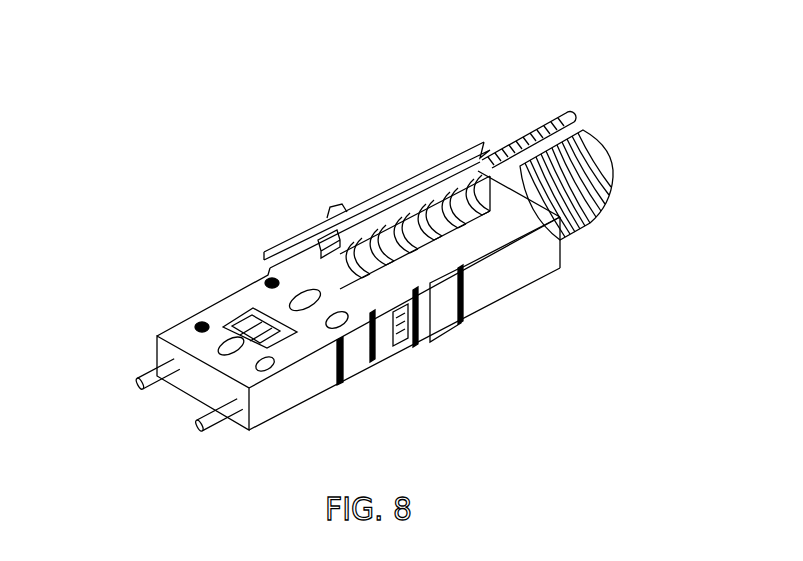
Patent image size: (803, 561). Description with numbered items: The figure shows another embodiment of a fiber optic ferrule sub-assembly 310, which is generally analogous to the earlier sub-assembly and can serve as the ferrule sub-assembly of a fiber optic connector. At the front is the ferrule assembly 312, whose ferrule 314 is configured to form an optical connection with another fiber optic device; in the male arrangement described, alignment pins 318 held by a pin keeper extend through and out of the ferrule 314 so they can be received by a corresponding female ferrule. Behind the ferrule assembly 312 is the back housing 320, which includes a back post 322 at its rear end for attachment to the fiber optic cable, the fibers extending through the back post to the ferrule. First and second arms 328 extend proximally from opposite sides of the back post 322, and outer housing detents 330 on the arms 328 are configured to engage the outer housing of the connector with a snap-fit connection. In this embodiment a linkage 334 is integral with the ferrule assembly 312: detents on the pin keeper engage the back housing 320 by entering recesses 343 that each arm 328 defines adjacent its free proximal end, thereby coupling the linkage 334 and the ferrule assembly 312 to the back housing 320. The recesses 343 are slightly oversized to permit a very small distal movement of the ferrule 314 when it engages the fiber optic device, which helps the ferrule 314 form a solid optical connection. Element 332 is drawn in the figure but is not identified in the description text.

The fiber optic ferrule sub-assembly 310 is at (231, 108).
The ferrule assembly 312 is at (200, 242).
The ferrule 314 is at (183, 340).
The alignment pins 318 is at (208, 409).
The back housing 320 is at (426, 116).
The back post 322 is at (592, 191).
The arms 328 is at (375, 195).
The outer housing detents 330 is at (340, 200).
The spring contacts 332 is at (434, 206).
The linkage 334 is at (306, 238).
The recesses 343 is at (409, 330).